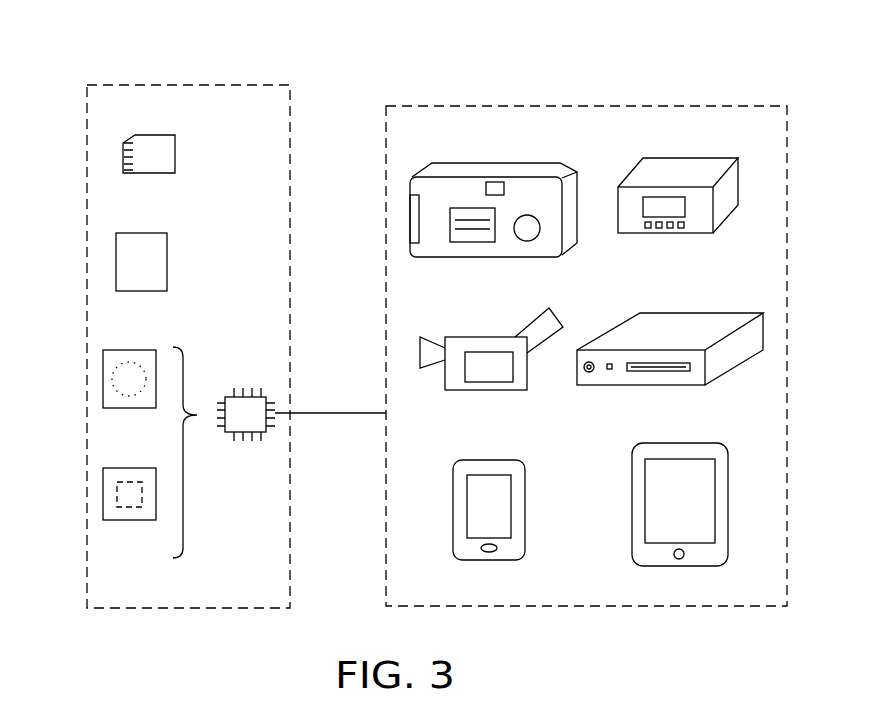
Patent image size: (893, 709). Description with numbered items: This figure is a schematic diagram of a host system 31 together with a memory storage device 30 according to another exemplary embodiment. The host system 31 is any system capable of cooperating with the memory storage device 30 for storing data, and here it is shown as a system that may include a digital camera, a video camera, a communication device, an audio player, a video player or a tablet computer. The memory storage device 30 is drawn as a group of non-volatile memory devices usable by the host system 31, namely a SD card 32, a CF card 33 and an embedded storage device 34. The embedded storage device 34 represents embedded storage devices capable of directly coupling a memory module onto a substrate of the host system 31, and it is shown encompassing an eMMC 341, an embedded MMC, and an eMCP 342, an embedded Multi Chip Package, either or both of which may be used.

The memory storage device 30 is at (180, 84).
The host system 31 is at (523, 105).
The SD card 32 is at (123, 160).
The CF card 33 is at (116, 264).
The embedded storage device 34 is at (246, 391).
The eMMC 341 is at (103, 381).
The eMCP 342 is at (103, 495).